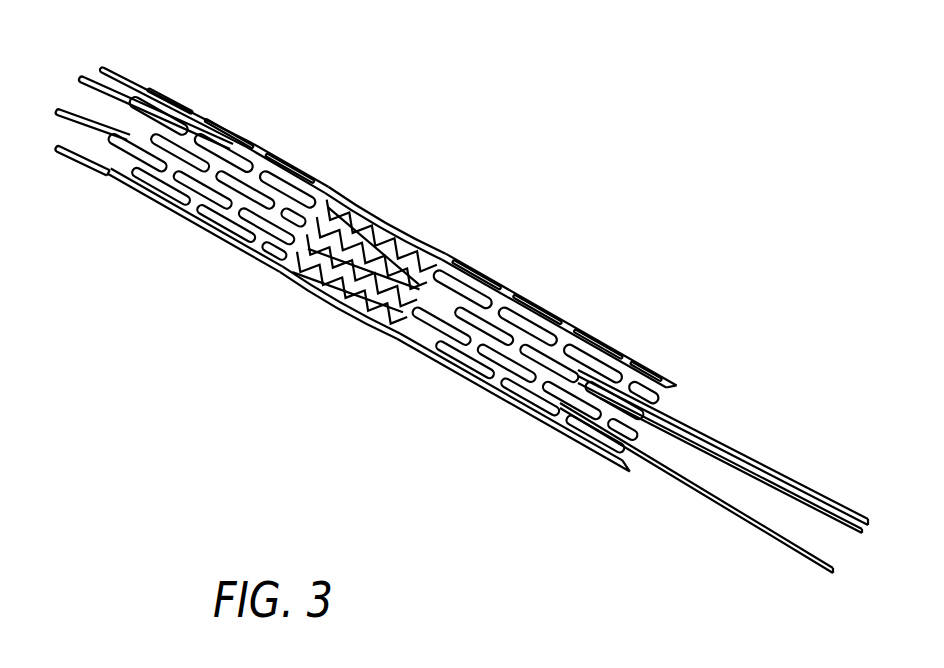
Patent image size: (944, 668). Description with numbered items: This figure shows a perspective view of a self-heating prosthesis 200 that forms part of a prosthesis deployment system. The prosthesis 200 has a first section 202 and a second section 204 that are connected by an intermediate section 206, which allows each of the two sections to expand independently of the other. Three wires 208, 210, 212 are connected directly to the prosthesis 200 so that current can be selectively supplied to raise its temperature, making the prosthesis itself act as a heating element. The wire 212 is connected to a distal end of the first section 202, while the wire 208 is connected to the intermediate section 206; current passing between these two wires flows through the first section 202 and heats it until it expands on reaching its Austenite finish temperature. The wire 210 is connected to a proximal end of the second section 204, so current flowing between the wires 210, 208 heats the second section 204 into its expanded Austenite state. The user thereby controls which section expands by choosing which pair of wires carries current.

The self-heating prosthesis 200 is at (322, 352).
The first section 202 is at (256, 122).
The second section 204 is at (567, 283).
The intermediate section 206 is at (396, 208).
The wire 208 is at (698, 490).
The wire 210 is at (725, 448).
The wire 212 is at (772, 464).